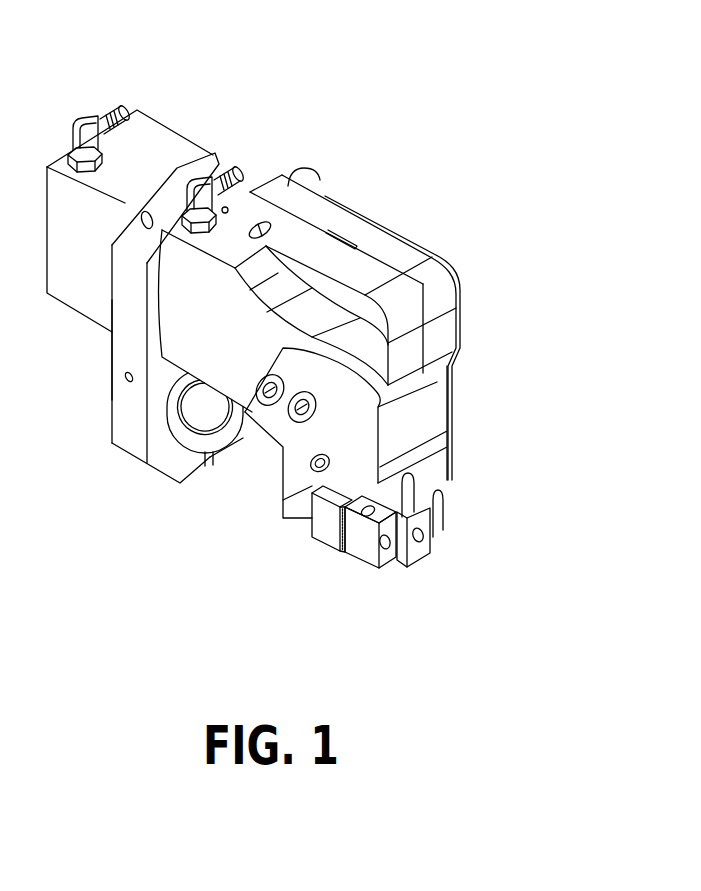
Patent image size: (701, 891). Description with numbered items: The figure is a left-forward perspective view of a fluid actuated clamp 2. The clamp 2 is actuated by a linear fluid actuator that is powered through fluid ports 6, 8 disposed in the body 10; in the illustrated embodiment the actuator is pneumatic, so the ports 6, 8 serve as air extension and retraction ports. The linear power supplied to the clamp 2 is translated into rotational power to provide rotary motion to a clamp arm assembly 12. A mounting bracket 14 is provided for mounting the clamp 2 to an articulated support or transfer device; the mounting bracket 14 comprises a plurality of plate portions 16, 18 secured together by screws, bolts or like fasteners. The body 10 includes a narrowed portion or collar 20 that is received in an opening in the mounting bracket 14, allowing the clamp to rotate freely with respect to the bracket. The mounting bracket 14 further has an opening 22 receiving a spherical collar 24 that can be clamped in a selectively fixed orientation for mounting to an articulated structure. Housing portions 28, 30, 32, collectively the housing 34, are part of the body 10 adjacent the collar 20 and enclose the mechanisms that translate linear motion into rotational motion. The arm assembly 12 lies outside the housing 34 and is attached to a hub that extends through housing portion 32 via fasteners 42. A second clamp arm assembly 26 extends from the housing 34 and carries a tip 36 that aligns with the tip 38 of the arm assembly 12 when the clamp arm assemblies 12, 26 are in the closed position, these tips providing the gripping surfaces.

The fluid actuated clamp 2 is at (309, 74).
The fluid port 6 is at (124, 104).
The fluid port 8 is at (238, 172).
The body 10 is at (196, 138).
The clamp arm assembly 12 is at (325, 444).
The mounting bracket 14 is at (108, 368).
The plate portion 16 is at (135, 450).
The plate portion 18 is at (235, 442).
The collar 20 is at (133, 190).
The opening 22 is at (208, 446).
The spherical collar 24 is at (177, 412).
The second clamp arm assembly 26 is at (297, 535).
The housing portion 28 is at (270, 267).
The housing portion 30 is at (310, 250).
The housing portion 32 is at (393, 250).
The housing 34 is at (468, 253).
The tip 36 is at (332, 530).
The tip 38 is at (368, 536).
The fasteners 42 is at (295, 393).